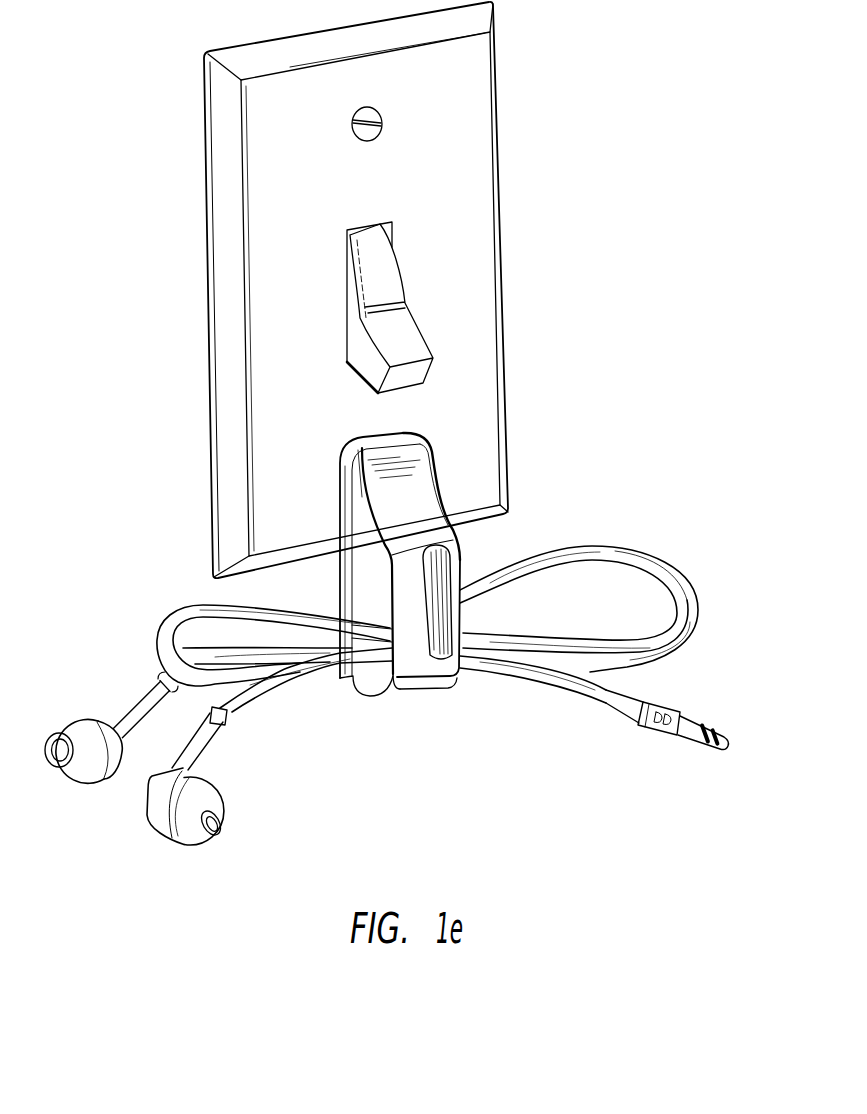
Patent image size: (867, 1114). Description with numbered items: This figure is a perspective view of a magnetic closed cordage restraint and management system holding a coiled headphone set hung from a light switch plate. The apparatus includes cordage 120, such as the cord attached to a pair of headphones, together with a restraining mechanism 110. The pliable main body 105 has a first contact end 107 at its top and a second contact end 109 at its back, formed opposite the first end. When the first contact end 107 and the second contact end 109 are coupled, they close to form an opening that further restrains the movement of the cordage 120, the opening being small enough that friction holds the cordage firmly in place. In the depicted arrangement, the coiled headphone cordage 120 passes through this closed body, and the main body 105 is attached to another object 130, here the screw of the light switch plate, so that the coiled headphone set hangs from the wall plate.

The another object 130 is at (260, 386).
The first contact end 107 is at (433, 435).
The main body 105 is at (423, 505).
The second contact end 109 is at (340, 497).
The restraining mechanism 110 is at (463, 543).
The cordage 120 is at (673, 578).